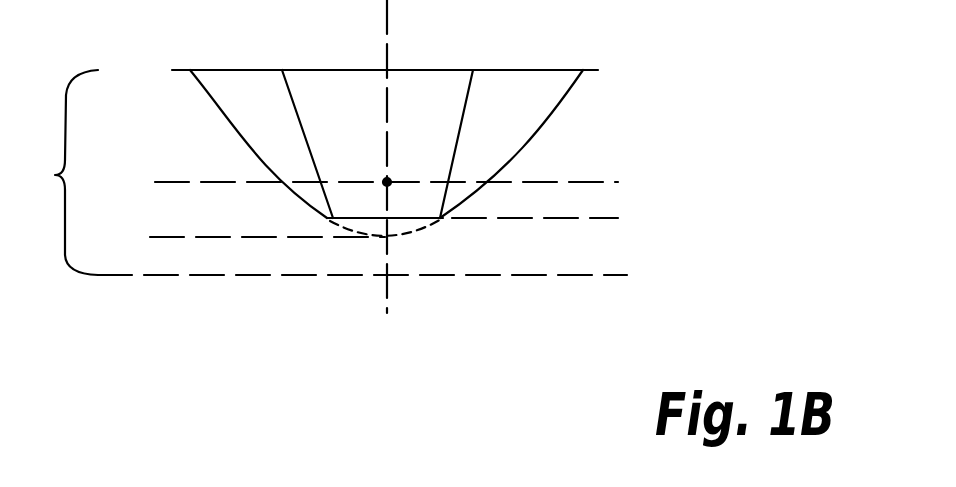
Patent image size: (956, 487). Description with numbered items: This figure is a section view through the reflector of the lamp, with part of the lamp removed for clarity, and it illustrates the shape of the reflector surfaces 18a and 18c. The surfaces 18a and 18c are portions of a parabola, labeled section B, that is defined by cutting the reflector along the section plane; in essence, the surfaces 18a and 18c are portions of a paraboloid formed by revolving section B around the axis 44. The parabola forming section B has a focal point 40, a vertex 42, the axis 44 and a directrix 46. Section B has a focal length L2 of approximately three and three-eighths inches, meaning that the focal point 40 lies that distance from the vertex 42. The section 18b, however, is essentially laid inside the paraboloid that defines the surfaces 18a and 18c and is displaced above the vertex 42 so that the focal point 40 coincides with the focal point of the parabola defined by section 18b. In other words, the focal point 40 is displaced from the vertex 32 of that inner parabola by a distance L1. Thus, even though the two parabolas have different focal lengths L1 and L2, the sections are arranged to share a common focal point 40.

The surface 18a is at (237, 111).
The section 18b is at (334, 100).
The surface 18c is at (572, 88).
The section B is at (532, 138).
The vertex 32 is at (365, 236).
The focal point 40 is at (387, 182).
The vertex 42 is at (388, 238).
The axis 44 is at (389, 13).
The directrix 46 is at (582, 277).
The focal length L1 is at (618, 182).
The focal length L2 is at (155, 182).